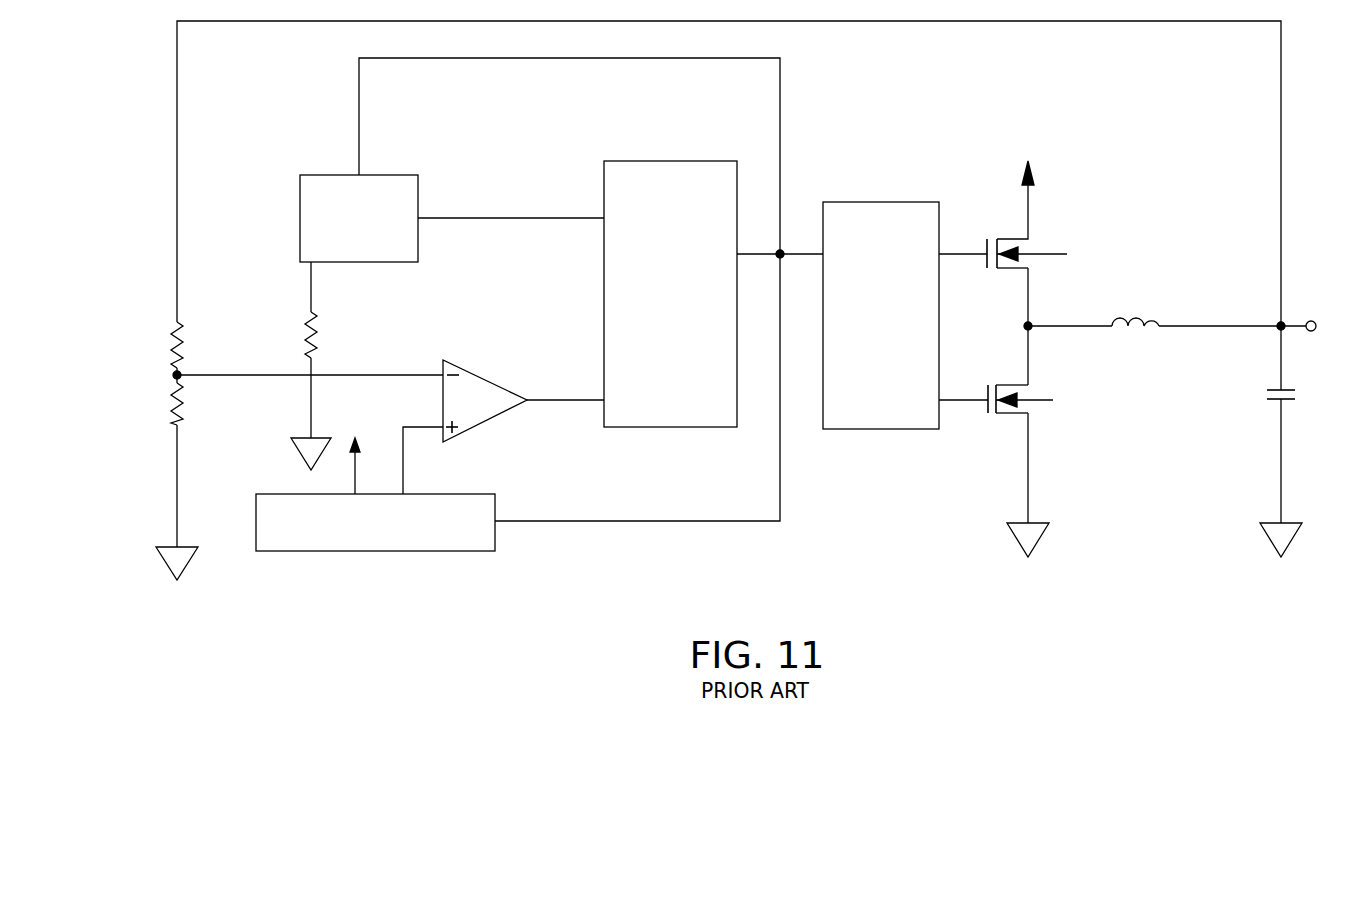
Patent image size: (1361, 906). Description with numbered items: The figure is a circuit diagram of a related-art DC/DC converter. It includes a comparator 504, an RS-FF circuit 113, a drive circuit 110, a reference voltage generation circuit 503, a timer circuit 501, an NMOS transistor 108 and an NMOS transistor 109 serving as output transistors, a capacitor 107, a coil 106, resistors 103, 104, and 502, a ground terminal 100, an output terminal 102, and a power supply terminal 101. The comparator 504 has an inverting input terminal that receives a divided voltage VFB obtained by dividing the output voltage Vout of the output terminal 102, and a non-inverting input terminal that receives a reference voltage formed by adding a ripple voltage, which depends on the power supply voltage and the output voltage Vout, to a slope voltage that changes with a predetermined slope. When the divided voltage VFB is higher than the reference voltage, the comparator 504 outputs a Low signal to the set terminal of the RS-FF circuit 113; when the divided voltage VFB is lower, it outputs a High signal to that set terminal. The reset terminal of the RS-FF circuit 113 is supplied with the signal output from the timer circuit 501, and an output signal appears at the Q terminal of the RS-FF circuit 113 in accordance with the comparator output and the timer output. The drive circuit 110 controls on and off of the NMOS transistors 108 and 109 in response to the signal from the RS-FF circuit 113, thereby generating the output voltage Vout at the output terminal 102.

The ground terminal 100 is at (186, 565).
The power supply terminal 101 is at (1031, 173).
The output terminal 102 is at (1310, 318).
The resistor 103 is at (175, 341).
The resistor 104 is at (175, 402).
The coil 106 is at (1134, 310).
The capacitor 107 is at (1293, 402).
The NMOS transistor 108 is at (991, 240).
The NMOS transistor 109 is at (994, 414).
The drive circuit 110 is at (880, 429).
The RS-FF circuit 113 is at (604, 295).
The timer circuit 501 is at (300, 221).
The resistor 502 is at (304, 322).
The reference voltage generation circuit 503 is at (256, 523).
The comparator 504 is at (443, 400).